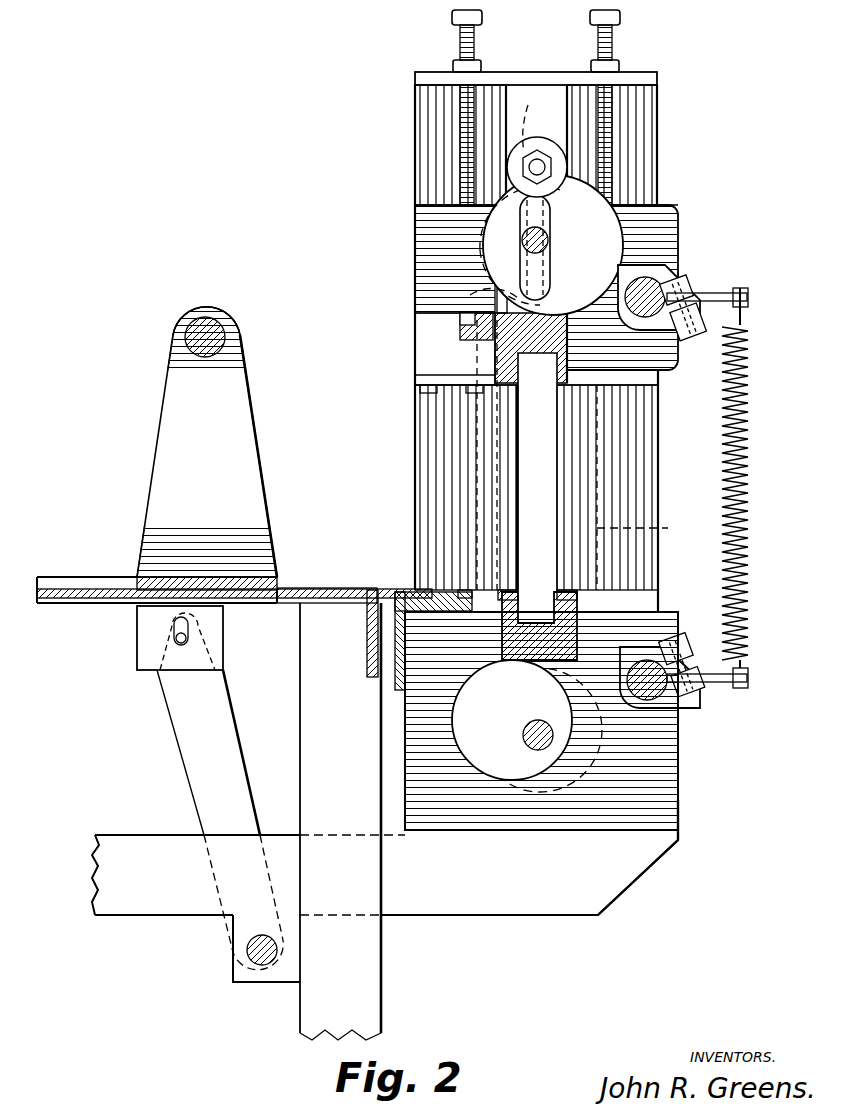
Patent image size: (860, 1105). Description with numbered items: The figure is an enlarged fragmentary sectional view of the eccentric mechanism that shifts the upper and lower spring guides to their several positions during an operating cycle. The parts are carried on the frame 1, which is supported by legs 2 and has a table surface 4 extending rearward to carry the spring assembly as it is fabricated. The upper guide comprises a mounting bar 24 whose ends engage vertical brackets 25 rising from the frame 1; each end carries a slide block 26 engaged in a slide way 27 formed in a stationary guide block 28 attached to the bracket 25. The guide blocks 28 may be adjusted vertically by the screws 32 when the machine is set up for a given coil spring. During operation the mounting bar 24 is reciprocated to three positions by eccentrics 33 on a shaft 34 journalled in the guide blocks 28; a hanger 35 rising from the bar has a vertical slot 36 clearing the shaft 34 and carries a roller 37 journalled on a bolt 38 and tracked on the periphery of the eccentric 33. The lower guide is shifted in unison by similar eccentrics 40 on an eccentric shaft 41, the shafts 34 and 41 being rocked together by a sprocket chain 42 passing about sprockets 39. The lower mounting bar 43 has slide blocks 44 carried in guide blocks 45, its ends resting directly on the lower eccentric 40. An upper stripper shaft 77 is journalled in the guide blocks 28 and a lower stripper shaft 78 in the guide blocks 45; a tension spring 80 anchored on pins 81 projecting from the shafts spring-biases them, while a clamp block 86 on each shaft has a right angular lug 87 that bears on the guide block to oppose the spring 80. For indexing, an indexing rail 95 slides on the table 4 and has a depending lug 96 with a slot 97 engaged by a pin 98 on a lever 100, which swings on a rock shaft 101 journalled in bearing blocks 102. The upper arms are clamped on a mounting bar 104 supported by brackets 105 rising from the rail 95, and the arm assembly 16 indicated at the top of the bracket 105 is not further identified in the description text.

The frame 1 is at (98, 812).
The legs 2 is at (378, 988).
The table surface 4 is at (64, 586).
The arm assembly 16 is at (165, 330).
The mounting bar 24 is at (538, 355).
The vertical brackets 25 is at (648, 458).
The slide blocks 26 is at (496, 298).
The slide ways 27 is at (497, 285).
The guide blocks 28 is at (668, 226).
The screws 32 is at (475, 38).
The eccentrics 33 is at (610, 237).
The shaft 34 is at (522, 242).
The hangers or roller brackets 35 is at (507, 172).
The vertical slot 36 is at (572, 213).
The roller 37 is at (534, 119).
The bolt 38 is at (538, 165).
The sprockets 39 is at (578, 270).
The eccentrics 40 is at (470, 745).
The eccentric shaft 41 is at (535, 738).
The sprocket chain 42 is at (650, 528).
The lower mounting bar 43 is at (538, 625).
The slide blocks 44 is at (588, 672).
The guide blocks 45 is at (668, 818).
The stripper shaft 77 is at (665, 275).
The lower stripper shaft 78 is at (668, 705).
The tension spring 80 is at (748, 462).
The pins 81 is at (748, 295).
The clamp block 86 is at (655, 340).
The right angular lug 87 is at (690, 325).
The indexing rail 95 is at (158, 590).
The lug 96 is at (213, 635).
The slot 97 is at (170, 626).
The pin 98 is at (186, 650).
The lever 100 is at (198, 766).
The rock shaft 101 is at (264, 970).
The bearing blocks 102 is at (235, 975).
The mounting bar 104 is at (193, 316).
The brackets 105 is at (255, 511).